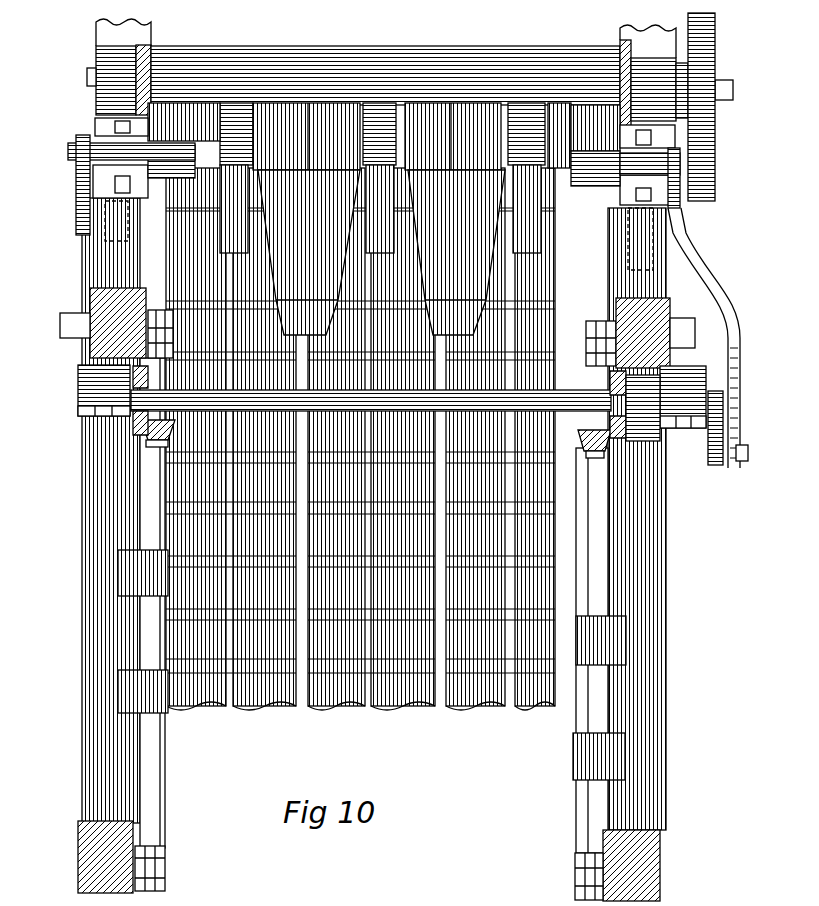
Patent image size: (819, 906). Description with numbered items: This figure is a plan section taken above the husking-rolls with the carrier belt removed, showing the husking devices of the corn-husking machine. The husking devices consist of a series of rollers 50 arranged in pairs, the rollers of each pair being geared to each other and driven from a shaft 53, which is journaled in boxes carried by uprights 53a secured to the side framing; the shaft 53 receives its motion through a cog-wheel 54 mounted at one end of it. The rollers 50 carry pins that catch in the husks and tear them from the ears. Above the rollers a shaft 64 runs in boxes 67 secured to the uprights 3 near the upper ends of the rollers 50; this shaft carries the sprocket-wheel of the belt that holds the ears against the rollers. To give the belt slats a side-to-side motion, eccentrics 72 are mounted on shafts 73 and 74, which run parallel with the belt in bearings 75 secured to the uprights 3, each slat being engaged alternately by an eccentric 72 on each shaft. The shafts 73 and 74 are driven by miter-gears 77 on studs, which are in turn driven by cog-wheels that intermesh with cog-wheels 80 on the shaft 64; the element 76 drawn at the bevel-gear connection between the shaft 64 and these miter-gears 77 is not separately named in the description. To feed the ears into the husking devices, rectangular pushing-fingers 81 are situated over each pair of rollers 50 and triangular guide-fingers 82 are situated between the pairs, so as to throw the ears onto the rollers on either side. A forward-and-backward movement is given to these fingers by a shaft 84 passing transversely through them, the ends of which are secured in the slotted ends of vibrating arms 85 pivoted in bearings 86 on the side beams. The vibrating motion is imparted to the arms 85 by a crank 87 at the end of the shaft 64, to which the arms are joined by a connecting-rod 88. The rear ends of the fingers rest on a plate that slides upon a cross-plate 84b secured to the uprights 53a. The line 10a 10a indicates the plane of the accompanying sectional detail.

The uprights 3 is at (626, 895).
The section line 10a 10a is at (60, 146).
The rollers 50 is at (262, 700).
The shaft 53 is at (78, 68).
The uprights 53a is at (730, 120).
The cog-wheel 54 is at (707, 30).
The shaft 64 is at (716, 400).
The boxes 67 is at (70, 372).
The eccentrics 72 is at (662, 758).
The shaft 73 is at (150, 790).
The shaft 74 is at (578, 808).
The bearings 75 is at (145, 320).
The shaft with bevel pinions 76 is at (195, 395).
The miter-gears 77 is at (128, 415).
The cog-wheels 80 is at (642, 435).
The pushing-fingers 81 is at (228, 100).
The guide-fingers 82 is at (312, 97).
The shaft 84 is at (355, 154).
The cross-plate 84b is at (296, 44).
The vibrating arms 85 is at (70, 187).
The bearings 86 is at (97, 235).
The crank 87 is at (735, 455).
The connecting-rod 88 is at (719, 338).